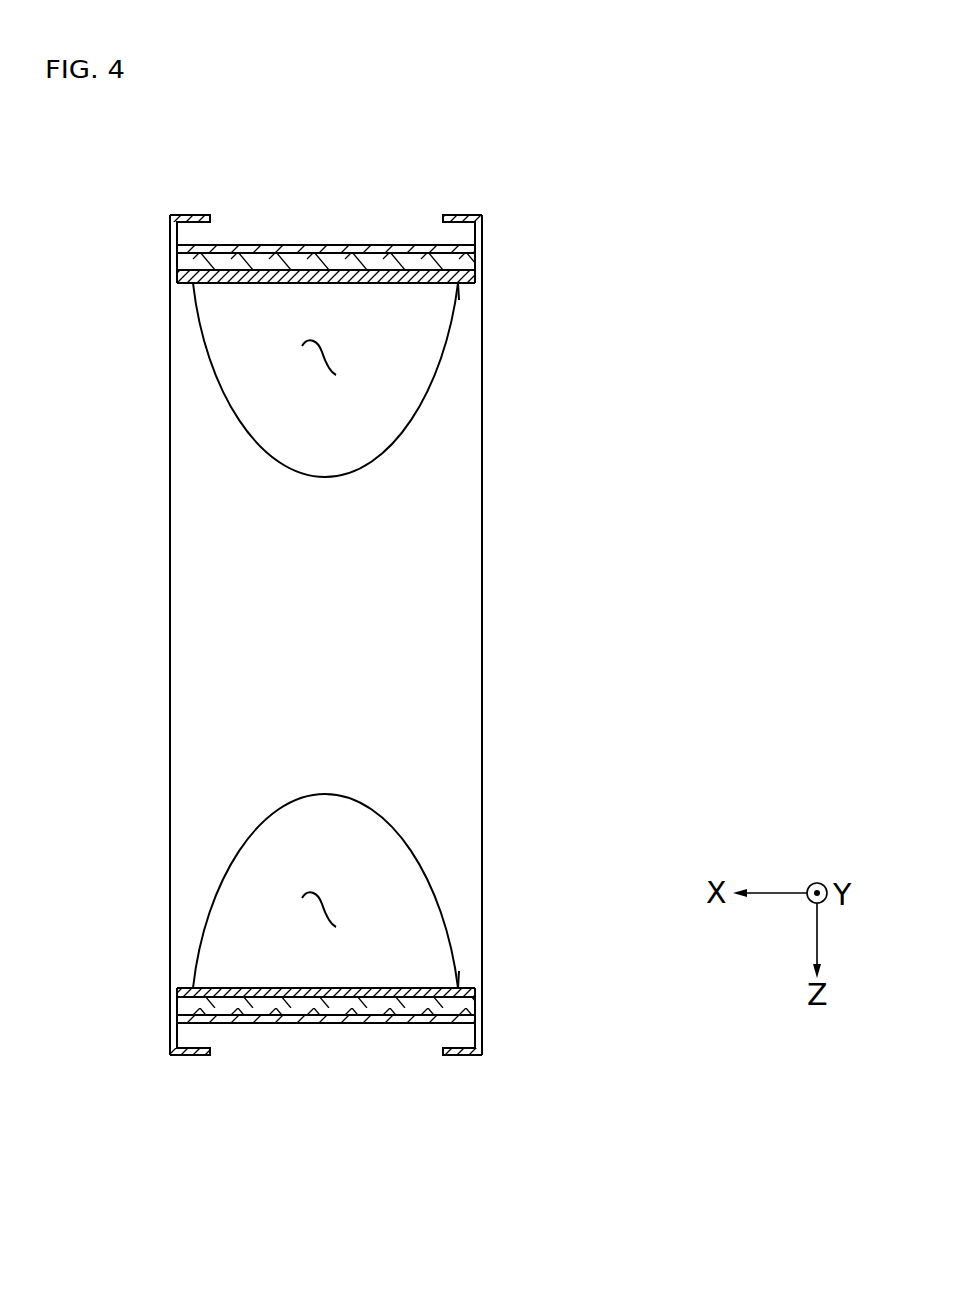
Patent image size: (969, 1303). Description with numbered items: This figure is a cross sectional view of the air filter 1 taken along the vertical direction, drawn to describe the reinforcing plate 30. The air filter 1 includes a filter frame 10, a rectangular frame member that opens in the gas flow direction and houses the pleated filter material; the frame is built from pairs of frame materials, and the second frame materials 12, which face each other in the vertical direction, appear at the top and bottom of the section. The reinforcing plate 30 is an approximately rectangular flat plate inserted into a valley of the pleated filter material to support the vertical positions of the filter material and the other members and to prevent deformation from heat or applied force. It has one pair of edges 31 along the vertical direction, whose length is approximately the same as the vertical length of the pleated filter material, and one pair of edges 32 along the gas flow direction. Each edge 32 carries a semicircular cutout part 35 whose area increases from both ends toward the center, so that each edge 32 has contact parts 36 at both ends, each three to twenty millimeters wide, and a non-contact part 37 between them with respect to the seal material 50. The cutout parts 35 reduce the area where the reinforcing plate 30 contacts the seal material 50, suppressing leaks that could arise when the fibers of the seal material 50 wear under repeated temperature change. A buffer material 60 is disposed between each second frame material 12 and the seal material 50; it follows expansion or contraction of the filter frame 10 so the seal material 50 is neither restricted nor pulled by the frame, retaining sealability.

The air filter 1 is at (361, 618).
The filter frame 10 is at (355, 614).
The second frame material 12 is at (172, 214).
The reinforcing plate 30 is at (320, 635).
The edges along the vertical direction 31 is at (483, 567).
The edges along the gas flow direction 32 is at (192, 286).
The cutout part 35 is at (325, 353).
The contact part 36 is at (462, 287).
The non-contact part 37 is at (306, 282).
The seal material 50 is at (407, 268).
The buffer material 60 is at (231, 262).